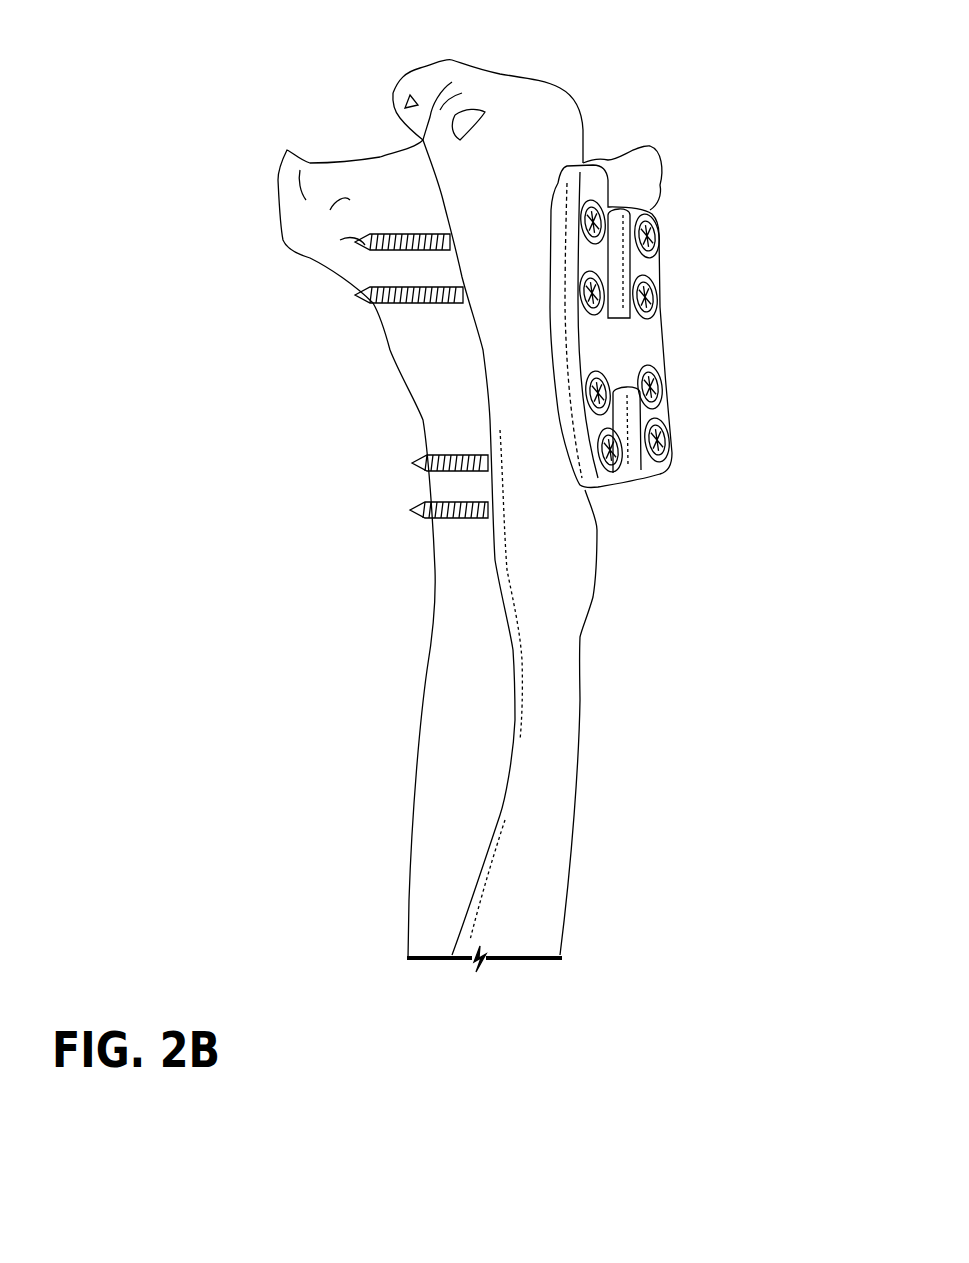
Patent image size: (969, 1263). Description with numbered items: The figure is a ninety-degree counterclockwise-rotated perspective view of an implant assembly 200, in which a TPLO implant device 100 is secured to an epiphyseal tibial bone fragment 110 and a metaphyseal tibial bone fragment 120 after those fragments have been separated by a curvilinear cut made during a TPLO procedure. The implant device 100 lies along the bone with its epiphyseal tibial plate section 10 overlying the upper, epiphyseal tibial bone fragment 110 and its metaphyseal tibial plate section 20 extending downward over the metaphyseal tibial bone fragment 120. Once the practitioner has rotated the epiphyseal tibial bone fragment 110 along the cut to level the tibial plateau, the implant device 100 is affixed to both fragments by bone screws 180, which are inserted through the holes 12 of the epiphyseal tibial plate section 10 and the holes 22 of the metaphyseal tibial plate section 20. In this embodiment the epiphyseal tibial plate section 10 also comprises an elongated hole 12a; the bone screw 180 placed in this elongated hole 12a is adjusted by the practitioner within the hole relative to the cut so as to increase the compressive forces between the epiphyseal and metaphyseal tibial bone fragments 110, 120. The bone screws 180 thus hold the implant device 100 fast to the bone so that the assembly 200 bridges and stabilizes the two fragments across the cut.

The implant assembly 200 is at (270, 75).
The epiphyseal tibial bone fragment 110 is at (652, 150).
The metaphyseal tibial bone fragment 120 is at (527, 560).
The TPLO implant device 100 is at (668, 346).
The epiphyseal tibial plate section 10 is at (647, 330).
The metaphyseal tibial plate section 20 is at (593, 483).
The holes 22 is at (607, 205).
The elongated hole 12a is at (660, 242).
The holes 12 is at (665, 462).
The bone screws 180 is at (357, 243).